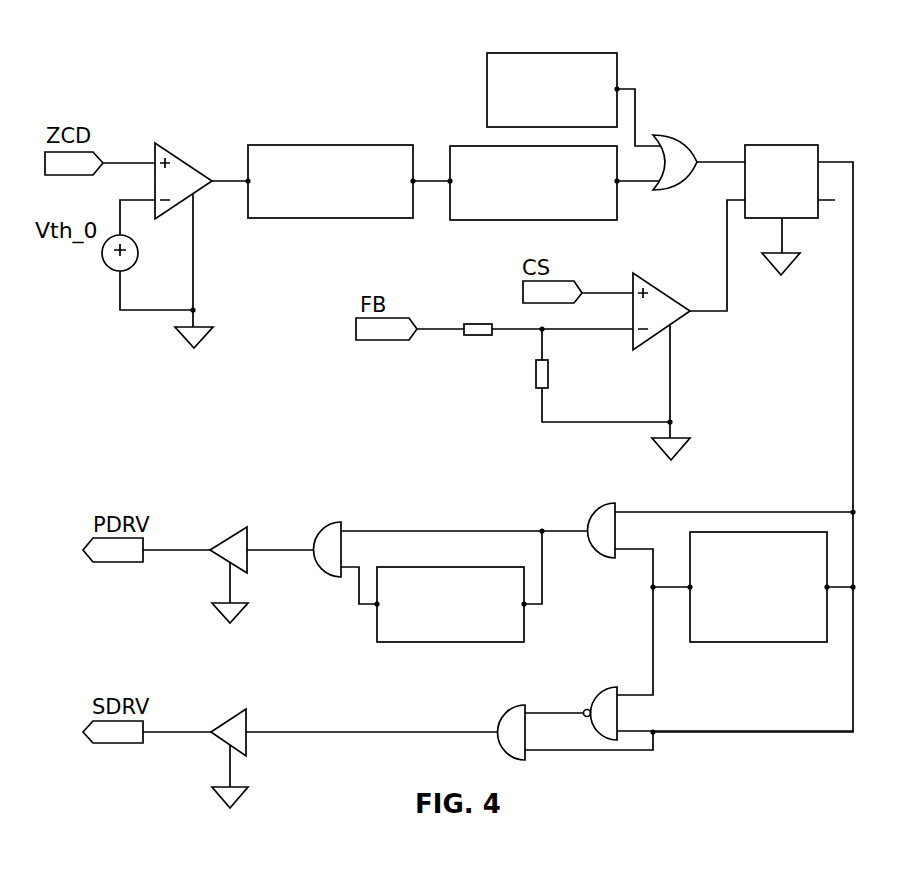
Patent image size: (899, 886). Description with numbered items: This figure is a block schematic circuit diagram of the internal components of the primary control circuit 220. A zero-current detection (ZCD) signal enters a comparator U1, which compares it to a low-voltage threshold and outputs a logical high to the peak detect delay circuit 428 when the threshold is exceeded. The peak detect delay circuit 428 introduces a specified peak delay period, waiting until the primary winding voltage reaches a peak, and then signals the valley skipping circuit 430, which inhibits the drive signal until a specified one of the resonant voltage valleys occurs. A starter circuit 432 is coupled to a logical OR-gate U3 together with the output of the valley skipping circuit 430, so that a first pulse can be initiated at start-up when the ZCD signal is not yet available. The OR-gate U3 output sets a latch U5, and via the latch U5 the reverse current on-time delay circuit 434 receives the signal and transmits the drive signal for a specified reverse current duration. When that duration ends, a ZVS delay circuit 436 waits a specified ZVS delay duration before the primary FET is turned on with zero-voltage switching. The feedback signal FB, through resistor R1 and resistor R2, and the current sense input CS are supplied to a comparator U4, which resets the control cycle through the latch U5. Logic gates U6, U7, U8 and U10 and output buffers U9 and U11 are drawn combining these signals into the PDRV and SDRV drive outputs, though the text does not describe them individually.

The primary control circuit 220 is at (780, 78).
The peak detect delay circuit 428 is at (293, 145).
The valley skipping circuit 430 is at (493, 146).
The starter circuit 432 is at (487, 79).
The reverse current on-time delay circuit 434 is at (735, 642).
The ZVS delay circuit 436 is at (418, 567).
The comparator U1 is at (183, 170).
The logical OR-gate U3 is at (675, 177).
The comparator U4 is at (662, 311).
The latch U5 is at (781, 169).
The AND gate U6 is at (607, 518).
The NAND gate U7 is at (605, 696).
The AND gate U8 is at (513, 717).
The buffer U9 is at (232, 718).
The AND gate U10 is at (336, 535).
The buffer U11 is at (234, 536).
The resistor R1 is at (478, 318).
The resistor R2 is at (558, 368).